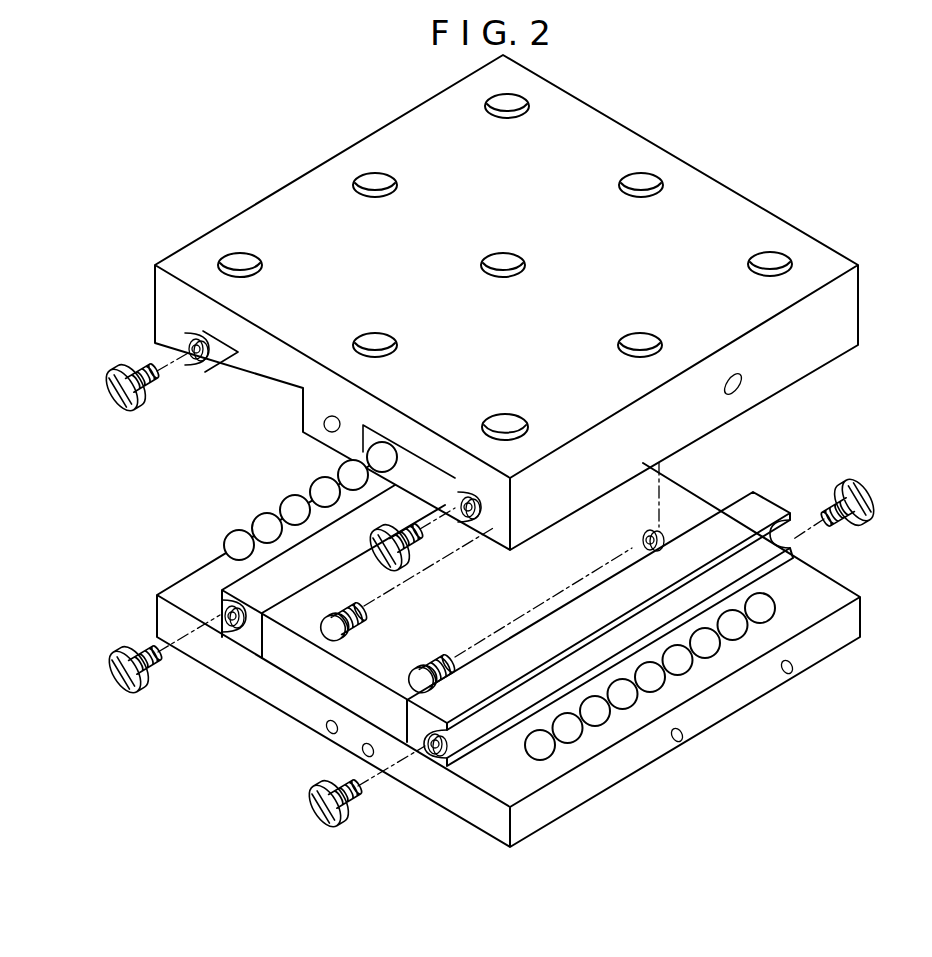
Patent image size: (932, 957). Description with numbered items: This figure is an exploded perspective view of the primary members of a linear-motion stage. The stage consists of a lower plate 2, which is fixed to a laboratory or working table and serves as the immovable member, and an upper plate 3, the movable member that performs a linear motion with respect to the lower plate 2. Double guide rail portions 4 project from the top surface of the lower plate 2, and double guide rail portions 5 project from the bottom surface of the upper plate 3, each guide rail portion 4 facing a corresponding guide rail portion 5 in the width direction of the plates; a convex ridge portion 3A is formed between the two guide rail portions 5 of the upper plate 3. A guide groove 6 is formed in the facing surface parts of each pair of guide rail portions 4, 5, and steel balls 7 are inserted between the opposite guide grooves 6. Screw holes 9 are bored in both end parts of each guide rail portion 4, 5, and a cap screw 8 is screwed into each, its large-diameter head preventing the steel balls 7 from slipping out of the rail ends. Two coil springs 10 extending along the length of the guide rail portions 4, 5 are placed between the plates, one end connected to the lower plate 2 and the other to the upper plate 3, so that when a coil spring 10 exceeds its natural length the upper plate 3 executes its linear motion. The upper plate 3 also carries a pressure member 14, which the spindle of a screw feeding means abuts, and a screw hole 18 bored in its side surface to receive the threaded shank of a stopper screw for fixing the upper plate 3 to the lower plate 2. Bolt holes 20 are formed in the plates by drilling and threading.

The lower plate 2 is at (632, 760).
The upper plate 3 is at (783, 372).
The convex ridge portion 3A is at (313, 402).
The guide rail portions 4 is at (250, 635).
The guide rail portions 5 is at (168, 306).
The guide groove 6 is at (232, 360).
The steel balls 7 is at (292, 492).
The cap screw 8 is at (107, 398).
The screw holes 9 is at (196, 358).
The coil springs 10 is at (362, 624).
The pressure member 14 is at (325, 428).
The screw hole 18 is at (731, 397).
The bolt hole 20 is at (643, 174).